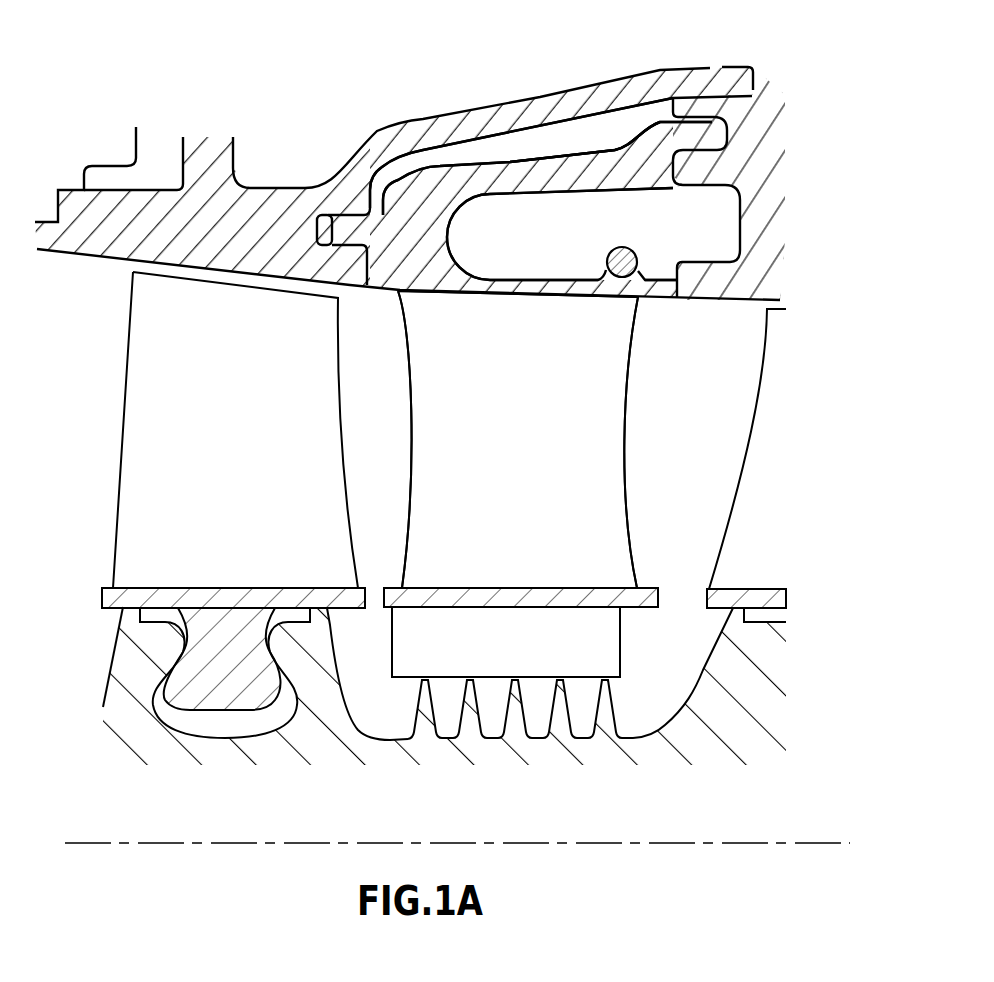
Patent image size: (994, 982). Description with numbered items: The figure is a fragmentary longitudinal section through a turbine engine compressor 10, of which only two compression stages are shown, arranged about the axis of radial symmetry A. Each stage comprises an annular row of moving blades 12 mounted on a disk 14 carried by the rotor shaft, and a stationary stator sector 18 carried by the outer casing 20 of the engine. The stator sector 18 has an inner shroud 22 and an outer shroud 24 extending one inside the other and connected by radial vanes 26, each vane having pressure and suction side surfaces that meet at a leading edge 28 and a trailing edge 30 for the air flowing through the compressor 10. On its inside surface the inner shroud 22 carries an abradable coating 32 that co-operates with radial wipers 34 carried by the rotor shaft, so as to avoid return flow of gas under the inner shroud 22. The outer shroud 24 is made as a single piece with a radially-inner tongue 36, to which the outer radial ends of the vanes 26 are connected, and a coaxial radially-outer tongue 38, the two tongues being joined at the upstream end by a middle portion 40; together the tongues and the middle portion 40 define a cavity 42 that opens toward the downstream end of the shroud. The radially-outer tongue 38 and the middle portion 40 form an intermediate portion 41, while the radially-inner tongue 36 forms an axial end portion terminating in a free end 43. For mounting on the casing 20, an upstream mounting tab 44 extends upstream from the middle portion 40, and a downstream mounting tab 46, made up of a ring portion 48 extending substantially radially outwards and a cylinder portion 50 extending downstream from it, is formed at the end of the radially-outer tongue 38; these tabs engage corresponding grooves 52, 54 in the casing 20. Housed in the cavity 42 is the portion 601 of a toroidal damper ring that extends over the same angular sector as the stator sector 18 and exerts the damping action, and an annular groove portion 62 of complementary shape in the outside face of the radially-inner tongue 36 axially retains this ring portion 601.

The compressor 10 is at (233, 67).
The moving blades 12 is at (143, 458).
The disk 14 is at (147, 668).
The stator sector 18 is at (633, 437).
The outer casing 20 is at (283, 217).
The inner shroud 22 is at (552, 584).
The outer shroud 24 is at (479, 147).
The radial vanes 26 is at (615, 387).
The leading edge 28 is at (412, 422).
The trailing edge 30 is at (640, 326).
The abradable coating 32 is at (437, 637).
The radial wipers 34 is at (560, 693).
The radially-inner tongue 36 is at (542, 283).
The radially-outer tongue 38 is at (485, 153).
The middle portion 40 is at (364, 162).
The intermediate portion 41 is at (398, 145).
The cavity 42 is at (417, 157).
The free end 43 is at (658, 292).
The upstream mounting tab 44 is at (340, 240).
The downstream mounting tab 46 is at (733, 112).
The ring portion 48 is at (555, 173).
The cylinder portion 50 is at (680, 133).
The groove 52 is at (340, 233).
The groove 54 is at (767, 173).
The ring portion 601 is at (610, 250).
The annular groove portion 62 is at (610, 272).
The axis of radial symmetry A is at (777, 842).